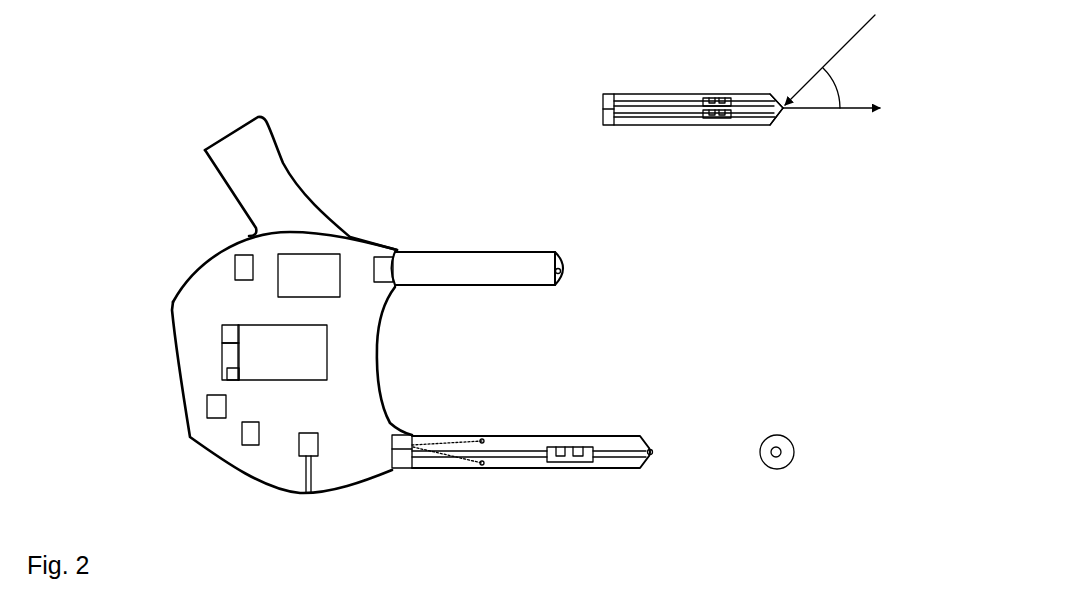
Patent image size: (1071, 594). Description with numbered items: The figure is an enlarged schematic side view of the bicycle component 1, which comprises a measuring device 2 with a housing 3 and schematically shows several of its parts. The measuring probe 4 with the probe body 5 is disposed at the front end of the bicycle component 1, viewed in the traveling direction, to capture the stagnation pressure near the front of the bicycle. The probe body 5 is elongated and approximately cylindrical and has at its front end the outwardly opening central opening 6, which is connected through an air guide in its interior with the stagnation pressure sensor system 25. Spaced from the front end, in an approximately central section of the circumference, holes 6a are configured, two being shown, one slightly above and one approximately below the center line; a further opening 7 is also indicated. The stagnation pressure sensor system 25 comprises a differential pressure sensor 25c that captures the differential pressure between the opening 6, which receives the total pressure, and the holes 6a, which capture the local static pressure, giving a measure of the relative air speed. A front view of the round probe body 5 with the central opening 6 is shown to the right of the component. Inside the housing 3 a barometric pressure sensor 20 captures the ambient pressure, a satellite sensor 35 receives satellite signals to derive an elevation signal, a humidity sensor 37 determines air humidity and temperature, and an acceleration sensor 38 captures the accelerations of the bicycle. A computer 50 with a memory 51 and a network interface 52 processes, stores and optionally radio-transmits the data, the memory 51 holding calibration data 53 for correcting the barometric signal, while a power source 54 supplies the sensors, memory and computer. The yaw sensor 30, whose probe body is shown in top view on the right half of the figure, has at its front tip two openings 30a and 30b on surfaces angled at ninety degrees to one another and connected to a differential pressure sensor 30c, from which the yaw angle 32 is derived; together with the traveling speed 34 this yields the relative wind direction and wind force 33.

The bicycle component 1 is at (120, 161).
The measuring device 2 is at (105, 271).
The housing 3 is at (171, 307).
The measuring probe 4 is at (513, 478).
The probe body 5 is at (447, 434).
The opening 6 is at (772, 452).
The hole 6a is at (485, 463).
The opening 7 is at (562, 280).
The barometric pressure sensor 20 is at (307, 445).
The stagnation pressure sensor system 25 is at (650, 416).
The differential pressure sensor 25c is at (397, 457).
The yaw sensor 30 is at (632, 144).
The opening 30a is at (778, 115).
The opening 30b is at (782, 105).
The differential pressure sensor 30c is at (384, 266).
The yaw angle 32 is at (840, 95).
The relative wind direction and wind force 33 is at (840, 52).
The traveling speed 34 is at (840, 117).
The satellite sensor 35 is at (239, 259).
The humidity sensor 37 is at (248, 433).
The acceleration sensor 38 is at (213, 407).
The computer 50 is at (317, 342).
The memory 51 is at (228, 357).
The network interface 52 is at (230, 332).
The calibration data 53 is at (229, 375).
The power source 54 is at (304, 262).